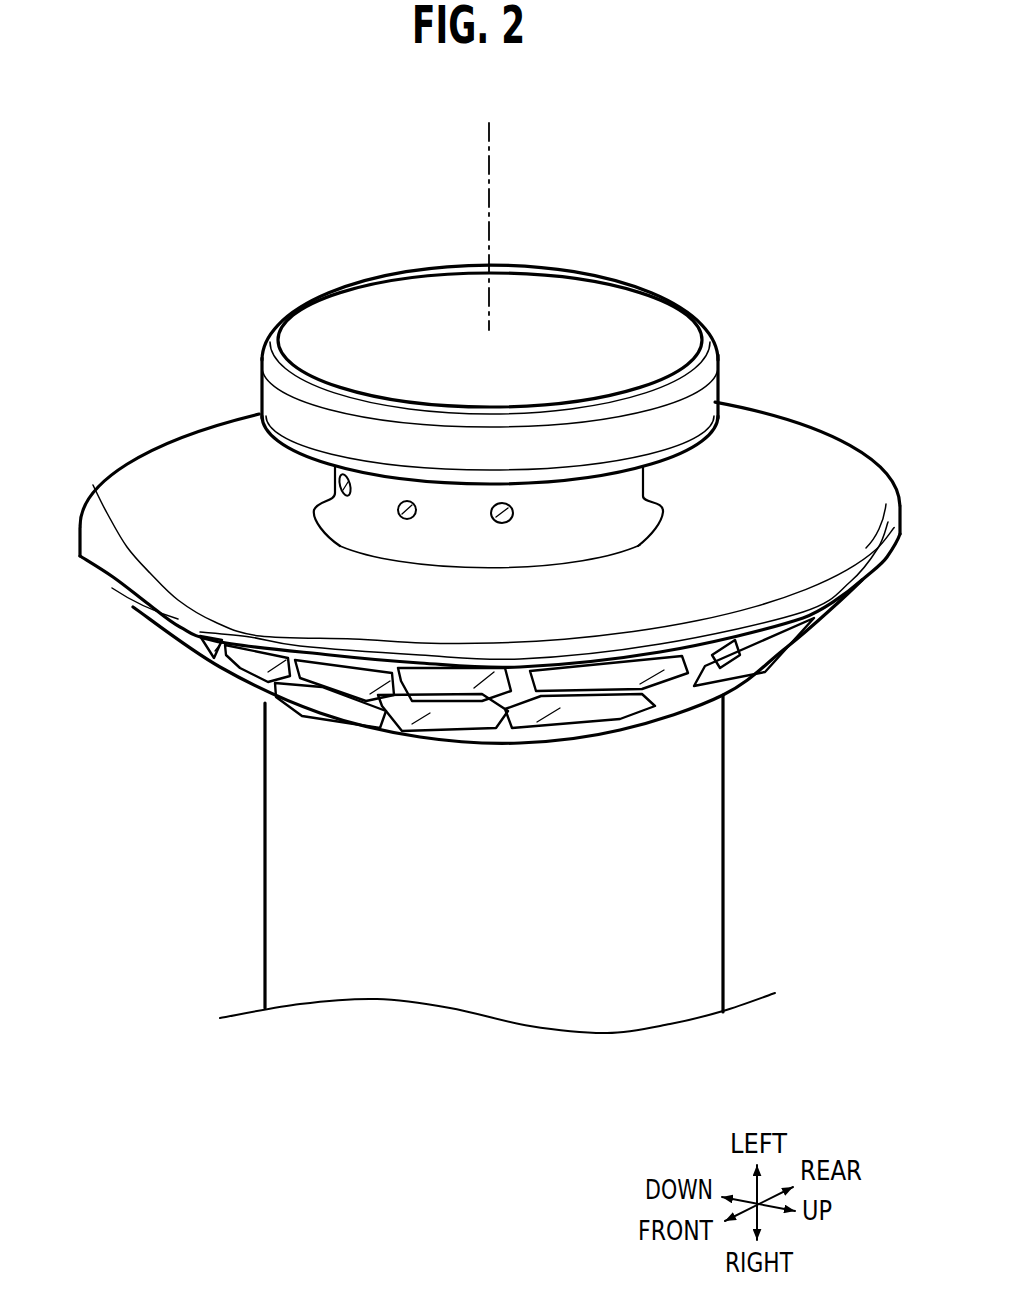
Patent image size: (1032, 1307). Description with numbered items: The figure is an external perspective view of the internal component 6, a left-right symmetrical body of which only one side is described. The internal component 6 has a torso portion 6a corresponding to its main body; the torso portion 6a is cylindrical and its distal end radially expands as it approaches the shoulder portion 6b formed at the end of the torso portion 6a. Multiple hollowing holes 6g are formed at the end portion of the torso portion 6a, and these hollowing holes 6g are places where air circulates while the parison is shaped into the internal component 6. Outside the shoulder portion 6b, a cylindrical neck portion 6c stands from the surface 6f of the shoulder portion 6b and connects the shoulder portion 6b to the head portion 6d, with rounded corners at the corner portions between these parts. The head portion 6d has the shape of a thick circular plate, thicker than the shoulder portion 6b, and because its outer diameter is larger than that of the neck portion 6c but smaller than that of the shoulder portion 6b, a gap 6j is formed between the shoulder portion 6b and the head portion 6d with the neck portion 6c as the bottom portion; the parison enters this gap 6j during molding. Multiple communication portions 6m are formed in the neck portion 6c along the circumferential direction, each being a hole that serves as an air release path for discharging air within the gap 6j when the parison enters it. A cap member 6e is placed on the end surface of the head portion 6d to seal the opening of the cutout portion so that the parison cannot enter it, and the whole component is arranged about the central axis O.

The internal component 6 is at (176, 227).
The central axis O is at (489, 209).
The torso portion 6a is at (724, 764).
The shoulder portion 6b is at (85, 538).
The neck portion 6c is at (645, 480).
The head portion 6d is at (710, 337).
The cap member 6e is at (610, 312).
The surface of the shoulder portion 6f is at (810, 440).
The hollowing holes 6g is at (332, 688).
The gap 6j is at (252, 492).
The communication portion 6m is at (502, 523).